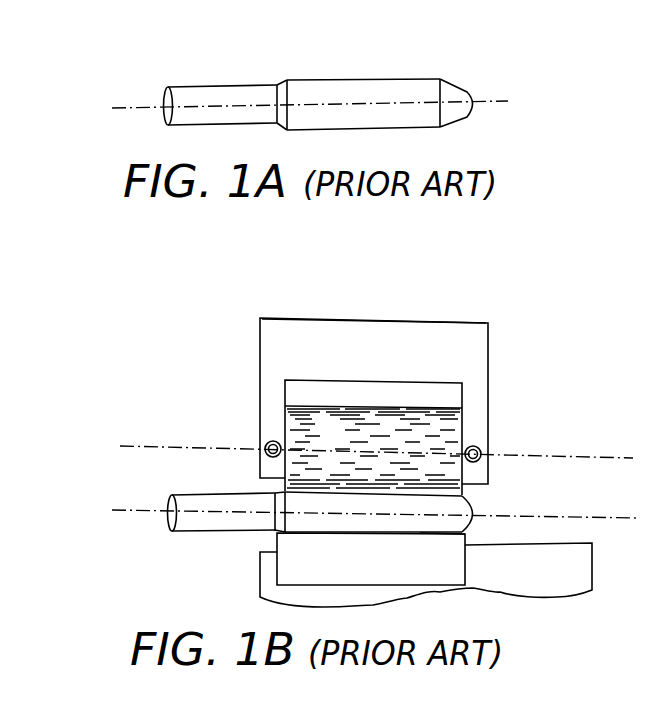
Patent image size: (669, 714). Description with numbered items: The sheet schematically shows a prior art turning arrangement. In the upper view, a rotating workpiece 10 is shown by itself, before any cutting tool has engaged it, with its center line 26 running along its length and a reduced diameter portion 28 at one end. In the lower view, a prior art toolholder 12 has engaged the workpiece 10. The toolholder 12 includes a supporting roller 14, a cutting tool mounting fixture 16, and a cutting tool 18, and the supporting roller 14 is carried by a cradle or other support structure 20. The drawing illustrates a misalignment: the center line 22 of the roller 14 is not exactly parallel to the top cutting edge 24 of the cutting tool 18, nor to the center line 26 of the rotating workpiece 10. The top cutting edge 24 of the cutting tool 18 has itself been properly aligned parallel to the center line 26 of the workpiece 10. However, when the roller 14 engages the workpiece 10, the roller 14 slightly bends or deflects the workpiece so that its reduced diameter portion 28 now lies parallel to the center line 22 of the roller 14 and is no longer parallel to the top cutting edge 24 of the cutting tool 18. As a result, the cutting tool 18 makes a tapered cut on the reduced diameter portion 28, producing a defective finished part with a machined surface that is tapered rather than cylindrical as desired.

In FIG. 1A, the rotating workpiece 10 is at (318, 80).
In FIG. 1B, the rotating workpiece 10 is at (202, 500).
In FIG. 1B, the toolholder 12 is at (488, 347).
In FIG. 1B, the supporting roller 14 is at (445, 442).
In FIG. 1B, the cutting tool mounting fixture 16 is at (567, 557).
In FIG. 1B, the cutting tool 18 is at (447, 550).
In FIG. 1B, the cradle 20 is at (392, 337).
In FIG. 1B, the center line of the roller 22 is at (568, 455).
In FIG. 1B, the top cutting edge 24 is at (447, 533).
In FIG. 1A, the center line of the workpiece 26 is at (122, 108).
In FIG. 1B, the center line of the workpiece 26 is at (137, 515).
In FIG. 1A, the reduced diameter portion 28 is at (388, 95).
In FIG. 1B, the reduced diameter portion 28 is at (393, 525).